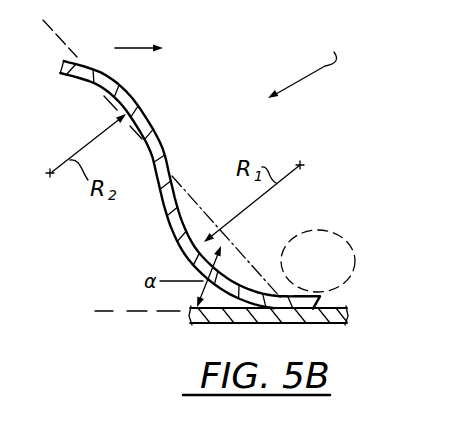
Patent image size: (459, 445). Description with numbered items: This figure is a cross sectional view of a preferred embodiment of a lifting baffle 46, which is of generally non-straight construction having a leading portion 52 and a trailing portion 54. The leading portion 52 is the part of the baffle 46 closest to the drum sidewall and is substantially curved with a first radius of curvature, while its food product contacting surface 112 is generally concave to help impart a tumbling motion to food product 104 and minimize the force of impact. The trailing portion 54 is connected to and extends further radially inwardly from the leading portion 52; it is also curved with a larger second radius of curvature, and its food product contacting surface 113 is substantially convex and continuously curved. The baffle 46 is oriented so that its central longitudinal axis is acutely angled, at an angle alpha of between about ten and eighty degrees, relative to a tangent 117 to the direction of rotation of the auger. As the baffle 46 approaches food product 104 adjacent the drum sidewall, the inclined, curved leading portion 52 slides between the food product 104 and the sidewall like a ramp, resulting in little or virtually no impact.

The lifting baffle 46 is at (302, 71).
The trailing portion 54 is at (96, 112).
The food product contacting surface of the trailing portion 113 is at (133, 93).
The food product contacting surface of the leading portion 112 is at (175, 202).
The leading portion 52 is at (261, 228).
The food product 104 is at (343, 234).
The tangent to the direction of rotation of the auger 117 is at (126, 312).